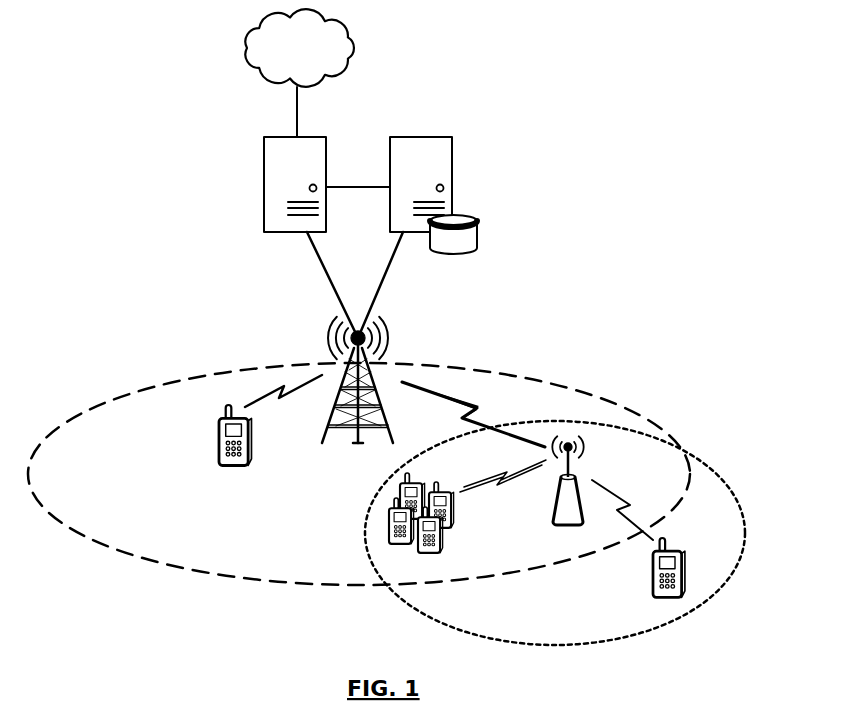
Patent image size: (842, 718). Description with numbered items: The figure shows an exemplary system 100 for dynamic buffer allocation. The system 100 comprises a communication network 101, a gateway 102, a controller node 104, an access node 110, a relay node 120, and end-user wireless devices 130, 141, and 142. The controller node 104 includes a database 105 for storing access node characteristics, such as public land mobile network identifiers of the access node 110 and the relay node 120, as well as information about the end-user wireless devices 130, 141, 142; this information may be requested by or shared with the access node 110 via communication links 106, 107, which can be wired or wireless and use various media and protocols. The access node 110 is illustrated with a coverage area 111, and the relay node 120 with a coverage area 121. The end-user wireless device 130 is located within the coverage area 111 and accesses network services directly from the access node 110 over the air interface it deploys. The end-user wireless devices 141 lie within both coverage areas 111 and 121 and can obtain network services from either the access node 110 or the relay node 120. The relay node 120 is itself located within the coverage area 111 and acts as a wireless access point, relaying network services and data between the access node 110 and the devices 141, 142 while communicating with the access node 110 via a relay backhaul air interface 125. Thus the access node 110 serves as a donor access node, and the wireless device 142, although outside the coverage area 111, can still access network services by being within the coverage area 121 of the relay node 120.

The system 100 is at (412, 68).
The communication network 101 is at (299, 73).
The gateway 102 is at (265, 158).
The controller node 104 is at (452, 153).
The database 105 is at (478, 219).
The communication link 106 is at (323, 268).
The communication link 107 is at (390, 270).
The access node 110 is at (357, 444).
The coverage area 111 is at (142, 558).
The relay node 120 is at (570, 444).
The coverage area 121 is at (690, 455).
The air interface 125 is at (472, 404).
The end-user wireless device 130 is at (220, 455).
The end-user wireless devices 141 is at (465, 510).
The end-user wireless device 142 is at (687, 590).